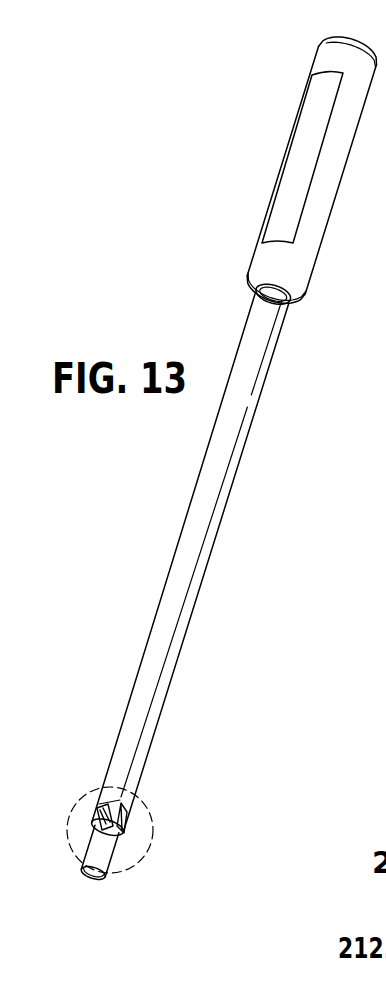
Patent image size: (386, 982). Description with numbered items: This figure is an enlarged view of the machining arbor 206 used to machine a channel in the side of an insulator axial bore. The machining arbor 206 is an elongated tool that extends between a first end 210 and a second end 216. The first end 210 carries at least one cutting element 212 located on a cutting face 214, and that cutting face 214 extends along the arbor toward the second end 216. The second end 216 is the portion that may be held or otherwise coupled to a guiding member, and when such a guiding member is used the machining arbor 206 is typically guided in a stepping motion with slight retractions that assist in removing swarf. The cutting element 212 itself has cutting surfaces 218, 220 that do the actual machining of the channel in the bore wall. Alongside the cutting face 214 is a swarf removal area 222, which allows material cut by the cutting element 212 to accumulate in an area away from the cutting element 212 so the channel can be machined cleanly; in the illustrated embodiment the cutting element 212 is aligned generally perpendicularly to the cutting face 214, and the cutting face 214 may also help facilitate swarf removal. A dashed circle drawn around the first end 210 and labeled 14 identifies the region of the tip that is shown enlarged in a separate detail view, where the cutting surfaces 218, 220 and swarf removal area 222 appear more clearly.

The machining arbor 206 is at (147, 221).
The second end 216 is at (312, 237).
The cutting face 214 is at (225, 453).
The cutting surface 218 is at (92, 837).
The cutting surface 220 is at (103, 820).
The swarf removal area 222 is at (127, 833).
The cutting element 212 is at (107, 800).
The first end 210 is at (128, 864).
The detail view FIG. 14 callout 14 is at (151, 838).